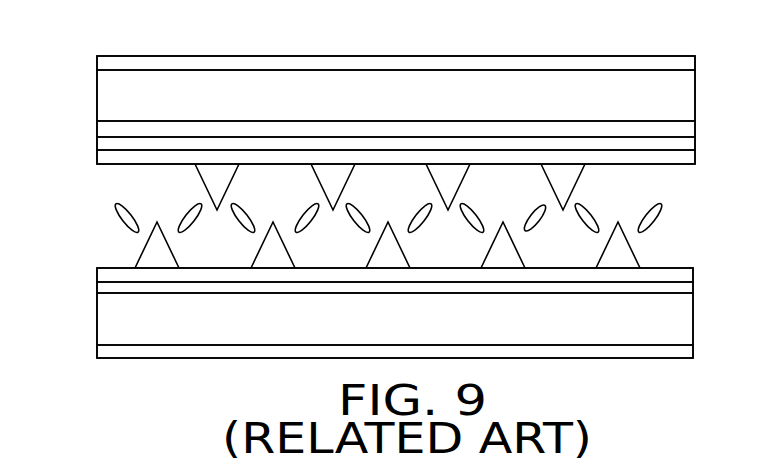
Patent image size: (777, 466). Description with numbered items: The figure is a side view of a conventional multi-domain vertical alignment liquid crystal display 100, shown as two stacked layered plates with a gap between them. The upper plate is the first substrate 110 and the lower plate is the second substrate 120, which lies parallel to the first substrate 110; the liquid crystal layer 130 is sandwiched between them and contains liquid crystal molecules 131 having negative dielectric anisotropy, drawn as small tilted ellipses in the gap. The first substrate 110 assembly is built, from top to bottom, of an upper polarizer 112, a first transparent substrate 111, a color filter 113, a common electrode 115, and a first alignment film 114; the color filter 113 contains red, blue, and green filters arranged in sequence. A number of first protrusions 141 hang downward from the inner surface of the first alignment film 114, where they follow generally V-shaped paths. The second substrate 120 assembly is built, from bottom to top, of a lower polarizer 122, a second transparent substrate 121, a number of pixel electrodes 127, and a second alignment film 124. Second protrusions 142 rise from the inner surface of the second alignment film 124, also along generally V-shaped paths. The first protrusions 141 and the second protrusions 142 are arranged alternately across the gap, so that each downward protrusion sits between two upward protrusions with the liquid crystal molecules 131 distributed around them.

The multi-domain vertical alignment liquid crystal display 100 is at (420, 37).
The first substrate 110 is at (90, 55).
The first transparent substrate 111 is at (672, 93).
The upper polarizer 112 is at (684, 64).
The color filter 113 is at (685, 130).
The first alignment film 114 is at (685, 158).
The common electrode 115 is at (685, 146).
The second substrate 120 is at (90, 267).
The second transparent substrate 121 is at (682, 322).
The lower polarizer 122 is at (685, 352).
The second alignment film 124 is at (673, 277).
The pixel electrodes 127 is at (685, 290).
The liquid crystal layer 130 is at (108, 183).
The diffusion particles 131 is at (588, 212).
The first protrusions 141 is at (562, 177).
The second protrusions 142 is at (620, 253).